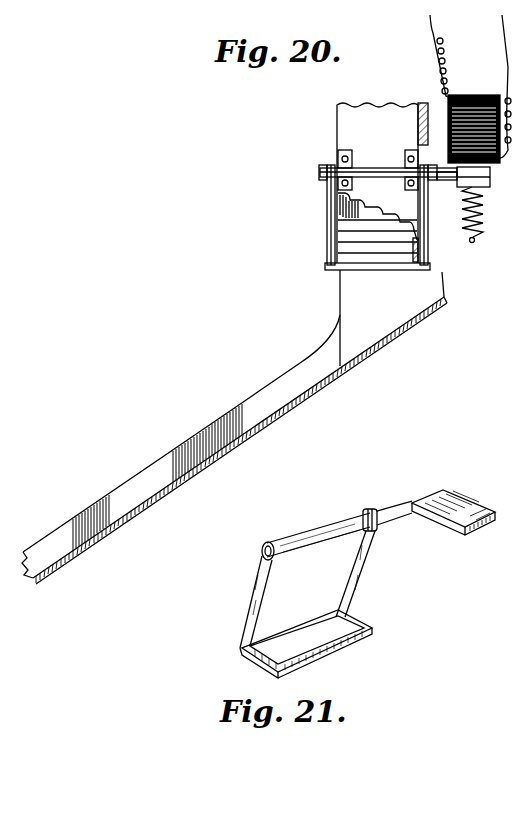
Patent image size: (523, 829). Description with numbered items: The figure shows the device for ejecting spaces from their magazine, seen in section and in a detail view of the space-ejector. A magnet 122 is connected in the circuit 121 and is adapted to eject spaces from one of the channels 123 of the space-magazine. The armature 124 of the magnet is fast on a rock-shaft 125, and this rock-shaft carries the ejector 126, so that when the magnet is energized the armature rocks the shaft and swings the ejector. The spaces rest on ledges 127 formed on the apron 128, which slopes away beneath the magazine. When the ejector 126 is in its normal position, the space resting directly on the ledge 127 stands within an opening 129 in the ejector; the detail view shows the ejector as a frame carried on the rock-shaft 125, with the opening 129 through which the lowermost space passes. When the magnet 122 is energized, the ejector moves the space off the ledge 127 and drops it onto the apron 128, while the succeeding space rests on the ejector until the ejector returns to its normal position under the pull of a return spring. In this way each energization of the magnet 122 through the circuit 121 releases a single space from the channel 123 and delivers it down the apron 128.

In FIG. 20, the circuit 121 is at (435, 68).
In FIG. 20, the magnet 122 is at (448, 118).
In FIG. 20, the channel 123 is at (355, 137).
In FIG. 20, the armature 124 is at (455, 181).
In FIG. 21, the armature 124 is at (475, 512).
In FIG. 21, the rock-shaft 125 is at (308, 532).
In FIG. 20, the ejector 126 is at (338, 268).
In FIG. 21, the ejector 126 is at (368, 626).
In FIG. 20, the ledge 127 is at (436, 284).
In FIG. 20, the apron 128 is at (355, 362).
In FIG. 21, the opening 129 is at (315, 640).